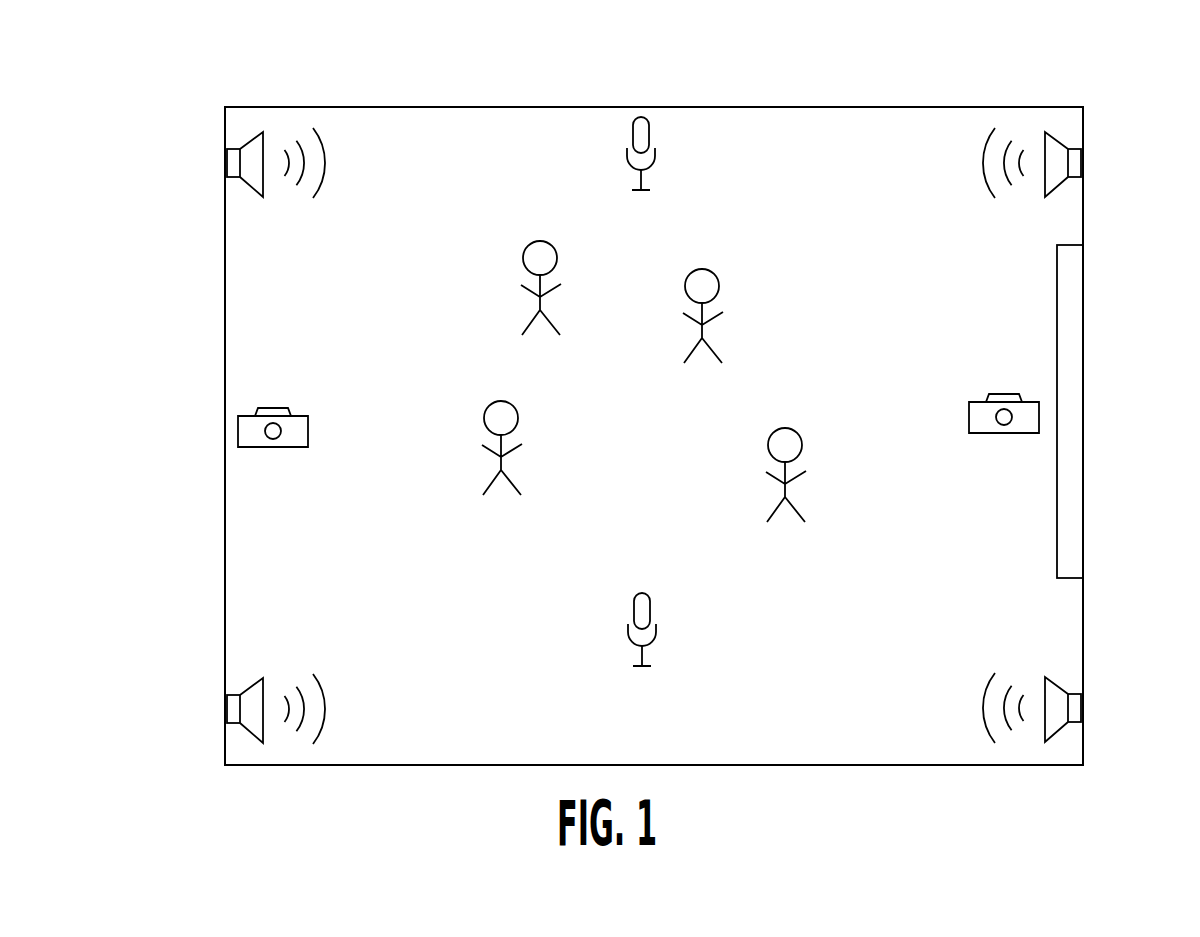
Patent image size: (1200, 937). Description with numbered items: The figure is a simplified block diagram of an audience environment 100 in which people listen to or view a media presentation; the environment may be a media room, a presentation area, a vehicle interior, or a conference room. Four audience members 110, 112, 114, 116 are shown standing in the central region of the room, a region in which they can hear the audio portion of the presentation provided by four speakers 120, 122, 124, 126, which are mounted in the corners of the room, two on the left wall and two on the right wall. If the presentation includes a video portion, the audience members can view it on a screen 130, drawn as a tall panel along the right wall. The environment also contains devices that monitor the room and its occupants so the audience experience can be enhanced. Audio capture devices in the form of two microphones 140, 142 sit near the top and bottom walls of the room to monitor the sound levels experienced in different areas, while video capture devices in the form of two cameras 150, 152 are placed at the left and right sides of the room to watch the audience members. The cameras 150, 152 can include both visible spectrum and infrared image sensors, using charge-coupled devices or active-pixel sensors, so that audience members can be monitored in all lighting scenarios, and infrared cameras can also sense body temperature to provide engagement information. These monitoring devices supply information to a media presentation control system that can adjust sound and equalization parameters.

The audience environment 100 is at (1030, 107).
The audience member 110 is at (718, 286).
The audience member 112 is at (800, 436).
The audience member 114 is at (518, 452).
The audience member 116 is at (523, 253).
The speaker 120 is at (1073, 163).
The speaker 122 is at (1078, 708).
The speaker 124 is at (228, 706).
The speaker 126 is at (228, 163).
The screen 130 is at (1073, 390).
The microphone 140 is at (657, 633).
The microphone 142 is at (657, 158).
The camera 150 is at (303, 415).
The camera 152 is at (977, 402).